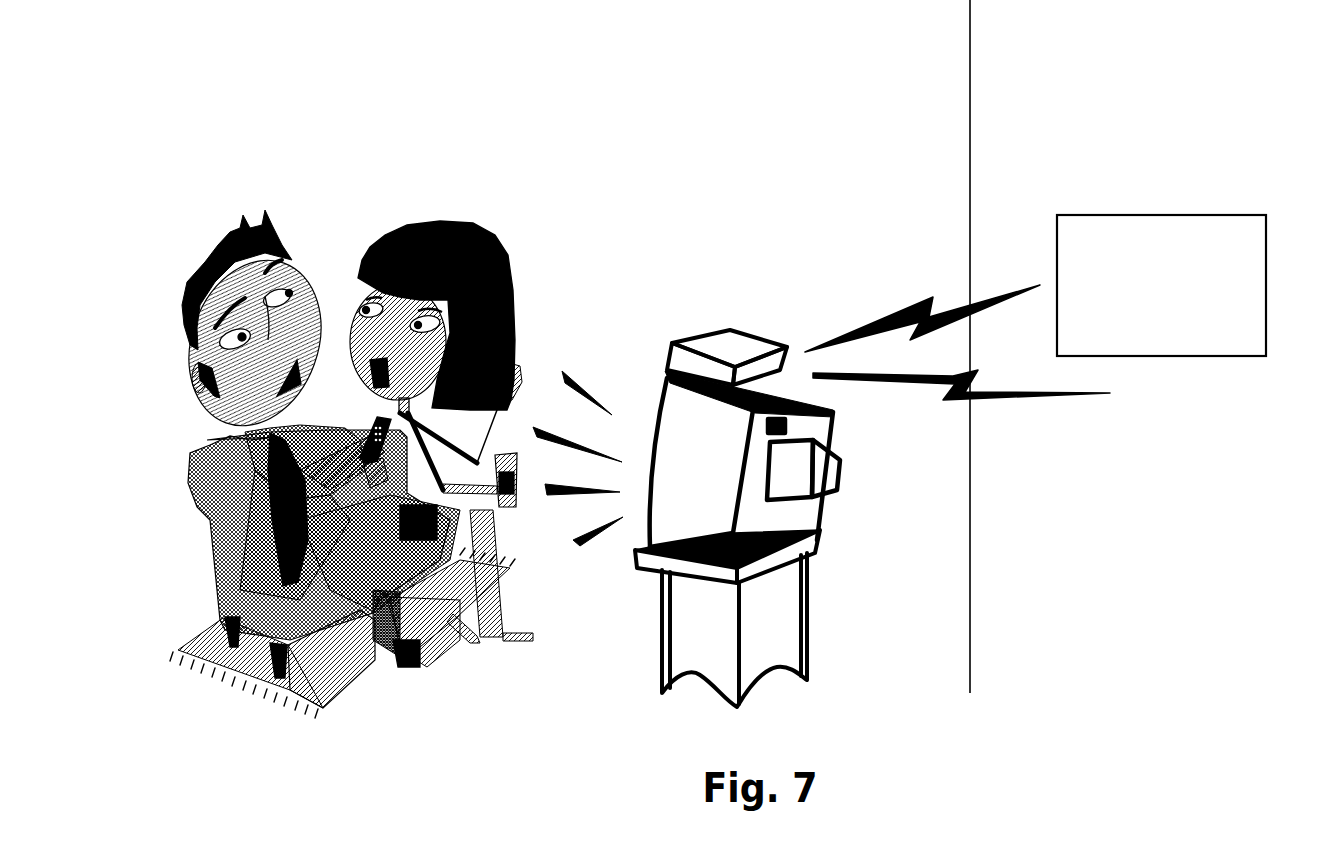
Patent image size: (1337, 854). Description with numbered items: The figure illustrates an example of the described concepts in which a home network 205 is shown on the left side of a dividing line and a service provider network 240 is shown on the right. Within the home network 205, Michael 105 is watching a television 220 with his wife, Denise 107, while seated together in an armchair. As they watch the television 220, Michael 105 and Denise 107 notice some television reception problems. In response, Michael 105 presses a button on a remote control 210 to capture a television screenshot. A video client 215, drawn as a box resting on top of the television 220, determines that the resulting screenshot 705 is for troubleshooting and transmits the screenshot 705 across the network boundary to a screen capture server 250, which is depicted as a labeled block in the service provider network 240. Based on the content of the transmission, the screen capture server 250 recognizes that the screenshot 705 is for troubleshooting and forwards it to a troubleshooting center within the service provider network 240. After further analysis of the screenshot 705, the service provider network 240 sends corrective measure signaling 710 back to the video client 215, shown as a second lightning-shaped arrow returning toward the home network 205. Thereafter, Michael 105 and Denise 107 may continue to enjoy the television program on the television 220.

The Michael 105 is at (242, 222).
The Denise 107 is at (418, 222).
The home network 205 is at (566, 78).
The remote control 210 is at (368, 438).
The video client 215 is at (735, 332).
The display 220 is at (838, 412).
The service provider network 240 is at (1111, 346).
The screen capture server 250 is at (1161, 285).
The screenshot 705 is at (922, 289).
The corrective measure signaling 710 is at (1051, 414).